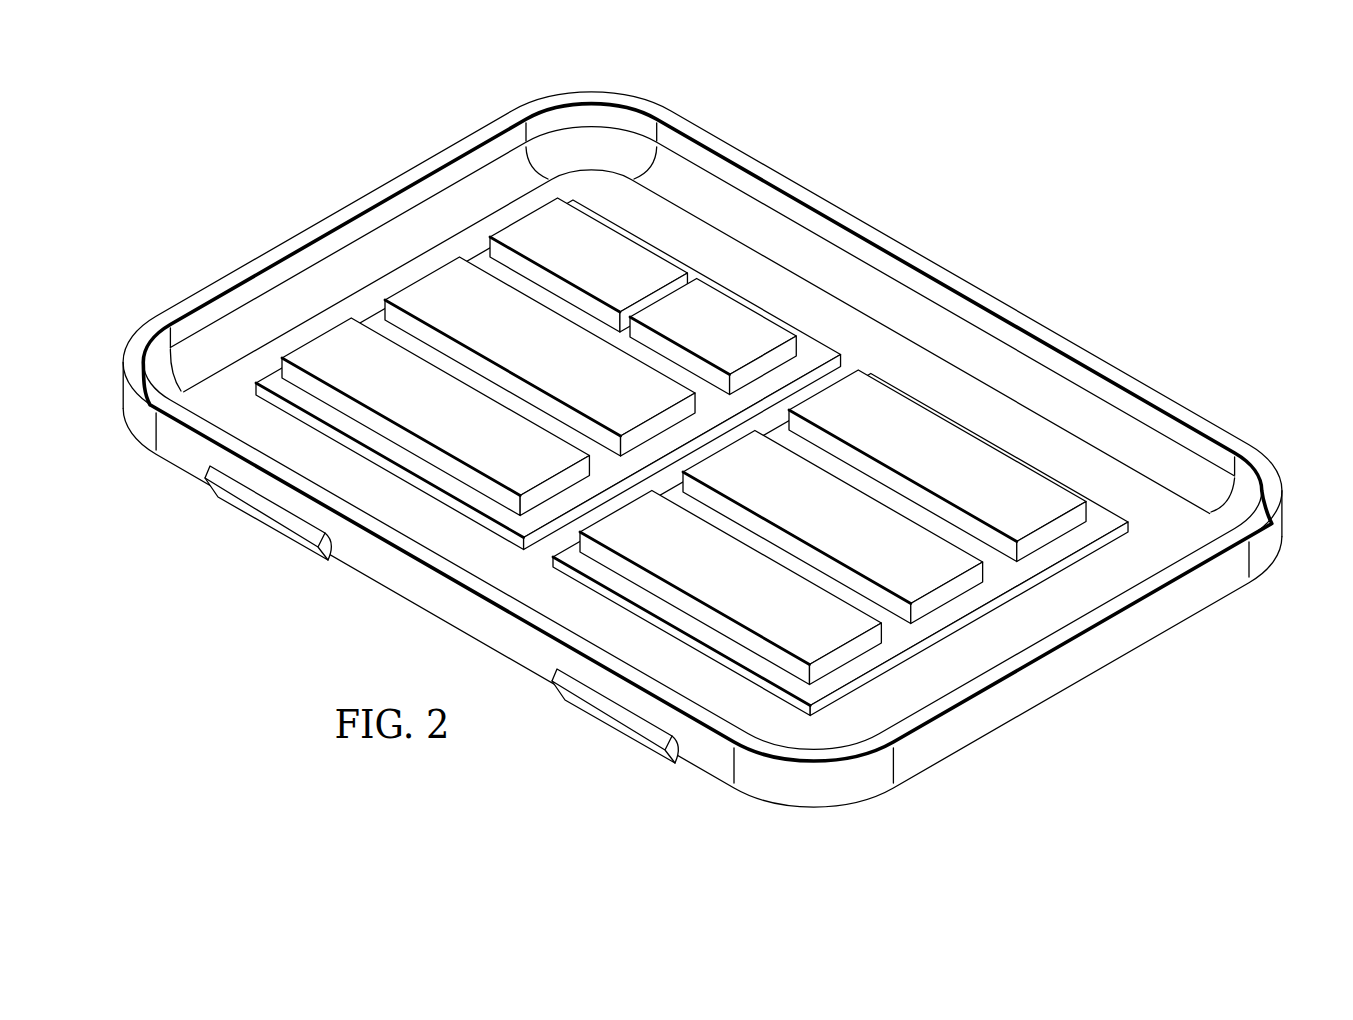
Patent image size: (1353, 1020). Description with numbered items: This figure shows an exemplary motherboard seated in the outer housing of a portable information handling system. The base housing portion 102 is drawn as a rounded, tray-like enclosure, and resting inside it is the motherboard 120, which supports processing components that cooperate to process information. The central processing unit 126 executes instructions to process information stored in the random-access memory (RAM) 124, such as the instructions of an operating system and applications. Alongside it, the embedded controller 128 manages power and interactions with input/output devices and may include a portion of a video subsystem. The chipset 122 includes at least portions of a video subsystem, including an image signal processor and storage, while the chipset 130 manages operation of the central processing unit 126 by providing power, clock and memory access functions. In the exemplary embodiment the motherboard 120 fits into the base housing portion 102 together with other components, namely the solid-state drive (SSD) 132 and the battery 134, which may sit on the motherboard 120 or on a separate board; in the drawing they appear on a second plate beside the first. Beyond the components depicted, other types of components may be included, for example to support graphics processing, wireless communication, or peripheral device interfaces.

The base housing portion 102 is at (958, 278).
The motherboard 120 is at (813, 347).
The chipset 122 is at (323, 347).
The random-access memory (RAM) 124 is at (428, 290).
The central processing unit 126 is at (531, 225).
The embedded controller 128 is at (707, 297).
The chipset 130 is at (1033, 487).
The solid-state drive (SSD) 132 is at (930, 577).
The battery 134 is at (823, 638).